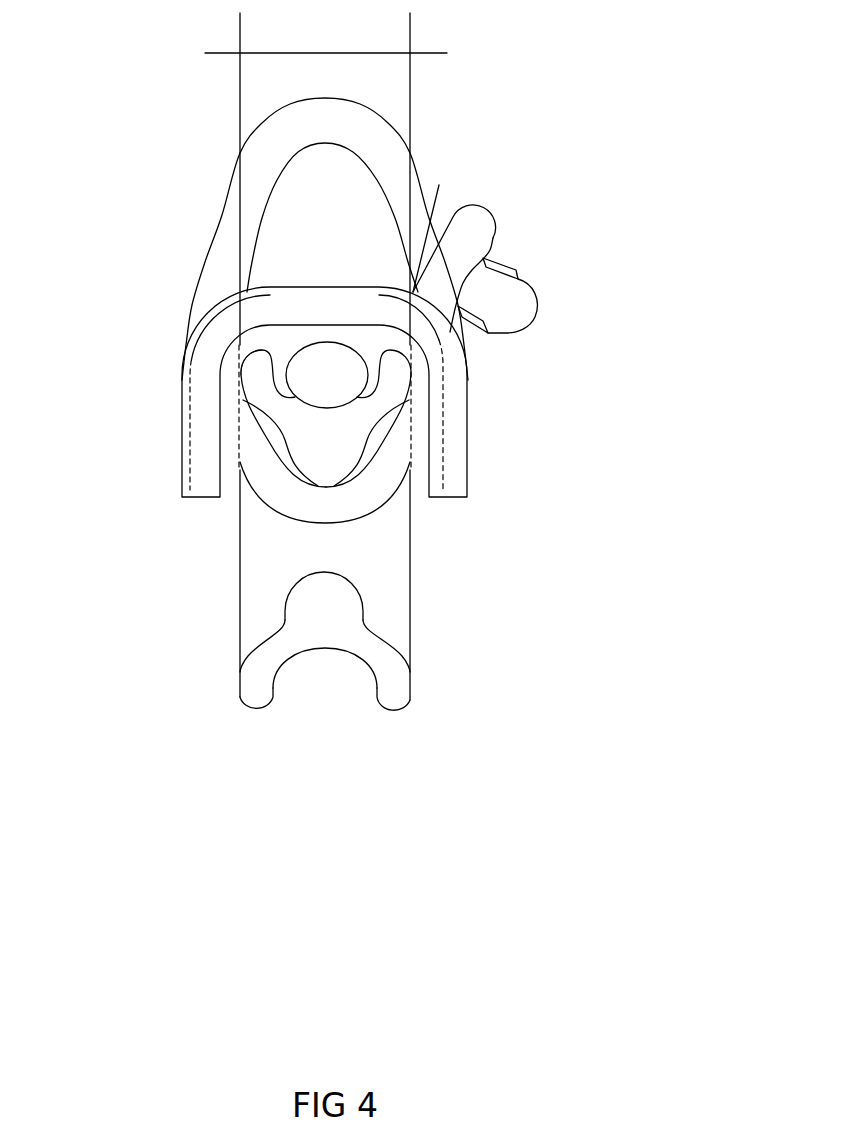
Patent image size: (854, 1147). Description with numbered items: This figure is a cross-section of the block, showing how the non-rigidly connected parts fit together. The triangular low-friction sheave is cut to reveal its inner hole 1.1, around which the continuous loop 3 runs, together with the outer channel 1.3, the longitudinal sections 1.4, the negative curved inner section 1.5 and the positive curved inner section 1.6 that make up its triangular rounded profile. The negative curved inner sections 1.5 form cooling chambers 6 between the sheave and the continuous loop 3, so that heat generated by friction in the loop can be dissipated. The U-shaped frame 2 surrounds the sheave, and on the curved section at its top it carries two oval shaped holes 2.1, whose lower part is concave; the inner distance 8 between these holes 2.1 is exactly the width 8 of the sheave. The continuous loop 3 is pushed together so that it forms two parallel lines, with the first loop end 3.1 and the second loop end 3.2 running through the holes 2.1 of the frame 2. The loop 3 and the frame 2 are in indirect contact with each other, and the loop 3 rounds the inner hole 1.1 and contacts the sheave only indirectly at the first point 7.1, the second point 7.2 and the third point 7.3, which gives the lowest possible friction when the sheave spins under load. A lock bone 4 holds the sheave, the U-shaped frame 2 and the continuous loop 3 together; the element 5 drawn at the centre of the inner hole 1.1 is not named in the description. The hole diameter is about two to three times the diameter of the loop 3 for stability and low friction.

The inner hole 1.1 is at (325, 545).
The outer channel 1.3 is at (322, 652).
The longitudinal sections 1.4 is at (497, 766).
The negative curved inner section 1.5 is at (500, 641).
The positive curved inner section 1.6 is at (337, 573).
The U-shaped frame 2 is at (188, 481).
The oval shaped holes 2.1 is at (568, 400).
The continuous loop 3 is at (215, 243).
The first loop end 3.1 is at (495, 208).
The second loop end 3.2 is at (537, 315).
The lock bone 4 is at (513, 268).
The through opening 5 is at (322, 362).
The cooling chambers 6 is at (536, 508).
The first point 7.1 is at (412, 384).
The second point 7.2 is at (315, 487).
The third point 7.3 is at (236, 382).
The inner distance / width 8 is at (326, 36).